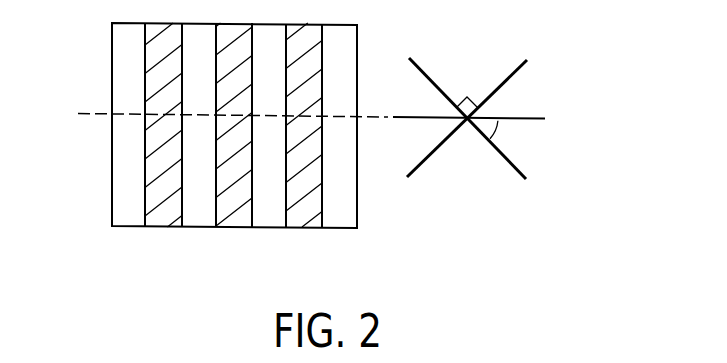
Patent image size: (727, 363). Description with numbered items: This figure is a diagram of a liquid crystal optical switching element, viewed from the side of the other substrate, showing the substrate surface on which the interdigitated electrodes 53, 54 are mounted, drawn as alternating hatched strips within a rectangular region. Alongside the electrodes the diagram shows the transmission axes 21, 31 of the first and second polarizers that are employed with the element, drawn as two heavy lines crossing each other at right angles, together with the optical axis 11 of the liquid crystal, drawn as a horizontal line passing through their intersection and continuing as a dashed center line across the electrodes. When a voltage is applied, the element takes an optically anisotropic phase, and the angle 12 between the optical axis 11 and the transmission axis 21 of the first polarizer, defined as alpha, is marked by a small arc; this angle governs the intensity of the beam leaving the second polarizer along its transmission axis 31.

The interdigitated electrode 53 is at (172, 218).
The interdigitated electrode 54 is at (230, 218).
The optical axis 11 is at (545, 118).
The angle 12 is at (496, 132).
The transmission axis of the first polarizer 21 is at (507, 162).
The transmission axis of the second polarizer 31 is at (513, 70).